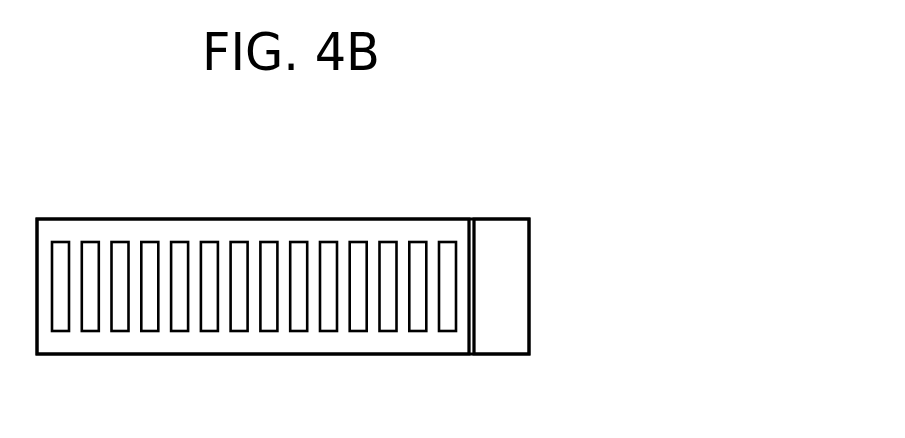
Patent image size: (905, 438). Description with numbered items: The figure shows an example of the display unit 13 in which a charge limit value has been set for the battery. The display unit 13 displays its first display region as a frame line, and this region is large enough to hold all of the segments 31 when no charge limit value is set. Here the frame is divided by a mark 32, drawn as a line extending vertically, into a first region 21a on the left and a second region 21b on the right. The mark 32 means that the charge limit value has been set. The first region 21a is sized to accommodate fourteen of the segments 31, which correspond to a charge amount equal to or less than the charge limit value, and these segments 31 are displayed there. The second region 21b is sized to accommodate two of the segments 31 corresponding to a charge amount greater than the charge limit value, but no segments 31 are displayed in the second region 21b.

The display unit 13 is at (496, 217).
The first region 21a is at (269, 229).
The second region 21b is at (516, 237).
The segments 31 is at (60, 331).
The mark 32 is at (470, 220).